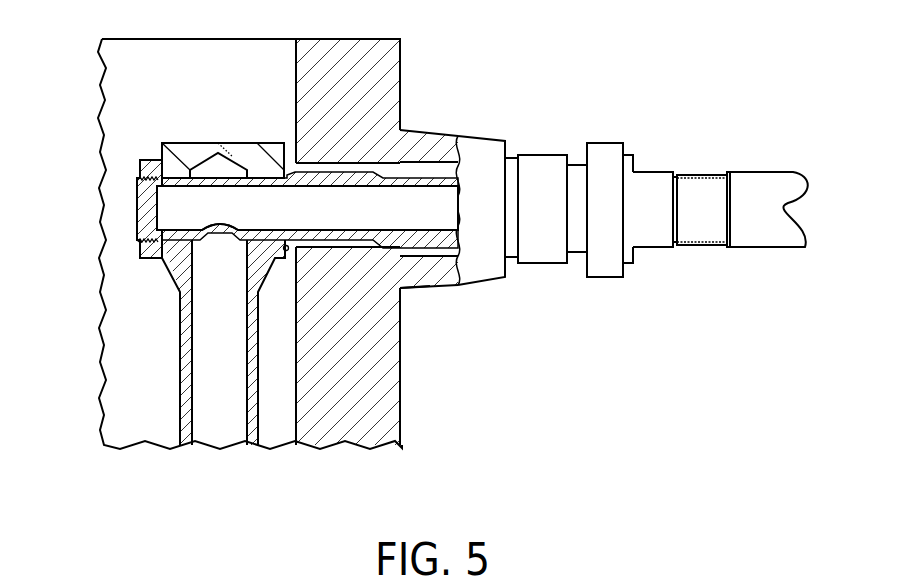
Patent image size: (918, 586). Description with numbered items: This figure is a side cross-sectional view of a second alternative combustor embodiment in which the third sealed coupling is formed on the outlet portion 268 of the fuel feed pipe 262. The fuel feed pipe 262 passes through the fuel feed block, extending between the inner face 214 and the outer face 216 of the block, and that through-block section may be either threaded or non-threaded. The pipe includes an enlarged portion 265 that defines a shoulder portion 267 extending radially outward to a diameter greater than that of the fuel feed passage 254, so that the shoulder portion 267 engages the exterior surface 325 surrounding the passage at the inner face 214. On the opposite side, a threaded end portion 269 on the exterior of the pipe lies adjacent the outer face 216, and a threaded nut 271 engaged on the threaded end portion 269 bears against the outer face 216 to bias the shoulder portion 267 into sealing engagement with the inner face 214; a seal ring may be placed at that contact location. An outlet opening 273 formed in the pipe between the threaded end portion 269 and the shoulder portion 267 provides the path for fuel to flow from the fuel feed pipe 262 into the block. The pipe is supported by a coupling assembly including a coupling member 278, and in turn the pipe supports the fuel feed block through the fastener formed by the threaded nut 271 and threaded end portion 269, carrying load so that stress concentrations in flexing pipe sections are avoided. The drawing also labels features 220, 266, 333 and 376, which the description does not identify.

The inner face 214 is at (288, 153).
The outer face 216 is at (158, 158).
The housing 220 is at (353, 432).
The fuel feed passage 254 is at (270, 230).
The fuel feed pipe 262 is at (696, 251).
The enlarged portion 265 is at (358, 160).
The shaft end 266 is at (652, 248).
The shoulder portion 267 is at (283, 167).
The outlet portion 268 is at (417, 280).
The threaded end portion 269 is at (147, 210).
The threaded nut 271 is at (145, 250).
The outlet opening 273 is at (222, 232).
The coupling member 278 is at (497, 293).
The exterior surface 325 is at (175, 143).
The o-ring seal 333 is at (290, 252).
The shaft collar assembly 376 is at (545, 147).